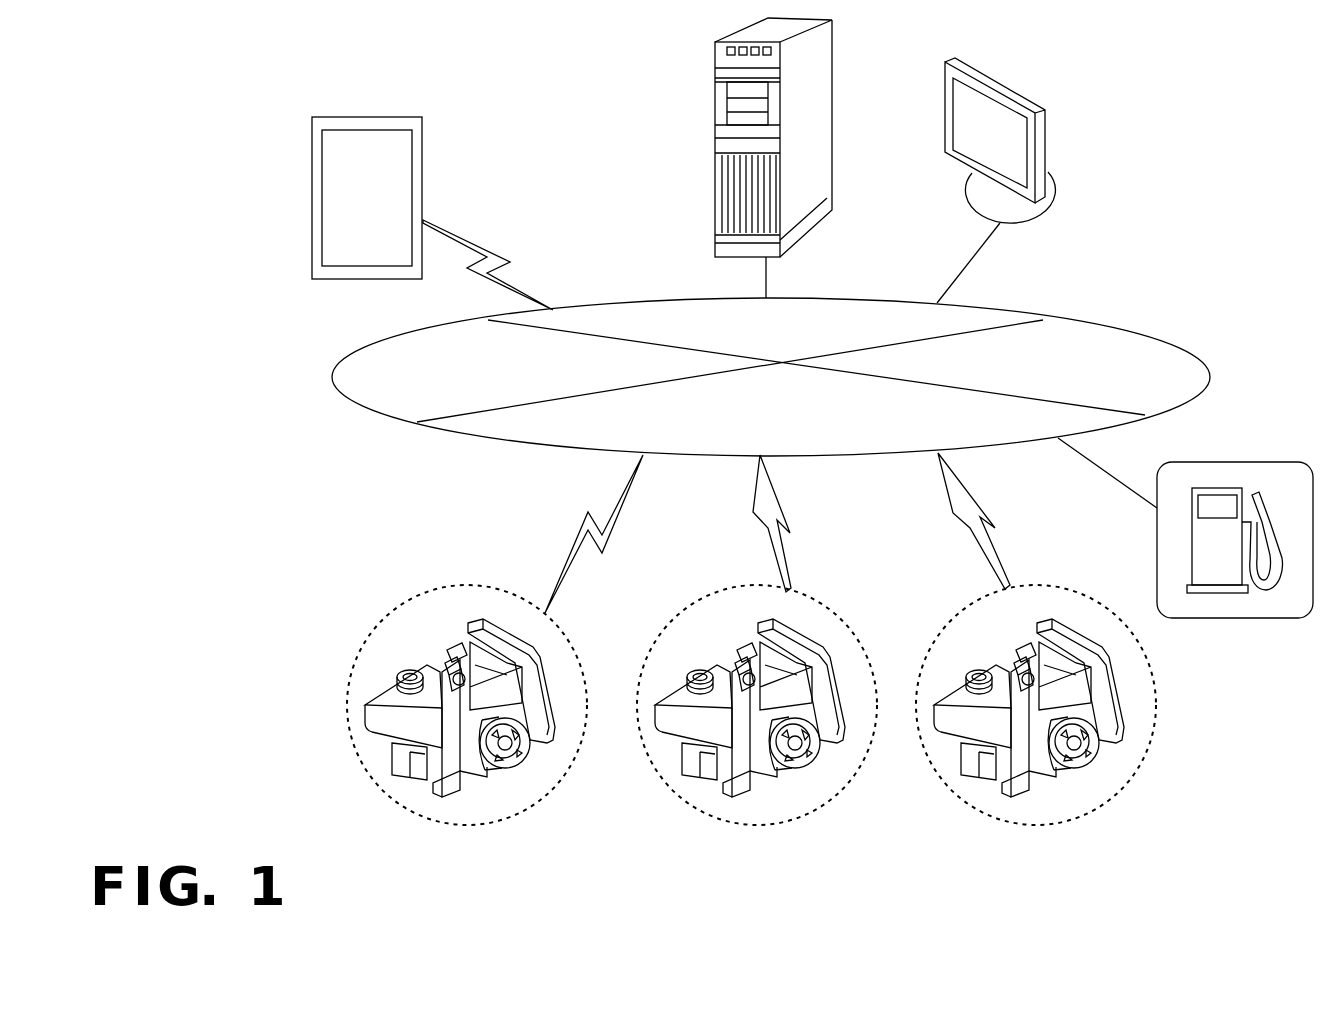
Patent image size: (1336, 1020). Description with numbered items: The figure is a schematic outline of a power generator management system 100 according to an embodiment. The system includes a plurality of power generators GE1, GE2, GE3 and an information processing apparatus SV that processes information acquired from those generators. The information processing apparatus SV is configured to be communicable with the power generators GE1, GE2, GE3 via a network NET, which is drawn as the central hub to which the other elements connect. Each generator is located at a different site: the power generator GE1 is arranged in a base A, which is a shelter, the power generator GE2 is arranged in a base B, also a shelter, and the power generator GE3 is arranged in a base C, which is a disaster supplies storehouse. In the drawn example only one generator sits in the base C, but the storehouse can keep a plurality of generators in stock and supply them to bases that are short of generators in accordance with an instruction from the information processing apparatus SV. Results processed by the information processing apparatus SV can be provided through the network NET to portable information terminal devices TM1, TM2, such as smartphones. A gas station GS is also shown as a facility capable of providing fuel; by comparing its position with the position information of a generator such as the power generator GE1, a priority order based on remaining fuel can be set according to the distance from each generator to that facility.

The power generator management system 100 is at (517, 66).
The information processing apparatus SV is at (715, 98).
The portable information terminal device TM1 is at (1045, 112).
The portable information terminal device TM2 is at (312, 150).
The network NET is at (1115, 327).
The gas station GS is at (1213, 618).
The base (shelter) A is at (415, 818).
The base (shelter) B is at (705, 818).
The base (disaster supplies storehouse) C is at (984, 818).
The power generator GE1 is at (511, 752).
The power generator GE2 is at (801, 752).
The power generator GE3 is at (1080, 752).